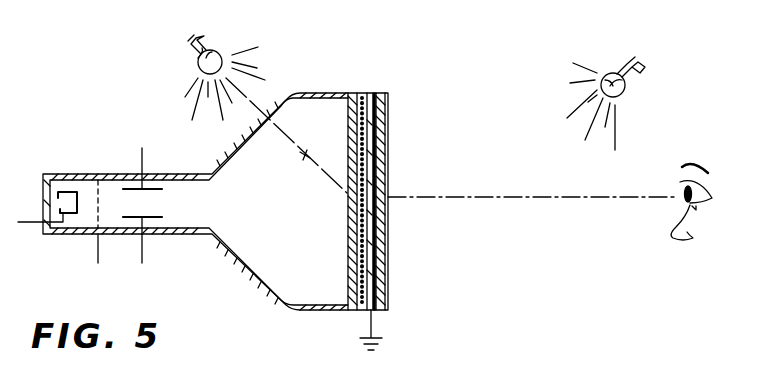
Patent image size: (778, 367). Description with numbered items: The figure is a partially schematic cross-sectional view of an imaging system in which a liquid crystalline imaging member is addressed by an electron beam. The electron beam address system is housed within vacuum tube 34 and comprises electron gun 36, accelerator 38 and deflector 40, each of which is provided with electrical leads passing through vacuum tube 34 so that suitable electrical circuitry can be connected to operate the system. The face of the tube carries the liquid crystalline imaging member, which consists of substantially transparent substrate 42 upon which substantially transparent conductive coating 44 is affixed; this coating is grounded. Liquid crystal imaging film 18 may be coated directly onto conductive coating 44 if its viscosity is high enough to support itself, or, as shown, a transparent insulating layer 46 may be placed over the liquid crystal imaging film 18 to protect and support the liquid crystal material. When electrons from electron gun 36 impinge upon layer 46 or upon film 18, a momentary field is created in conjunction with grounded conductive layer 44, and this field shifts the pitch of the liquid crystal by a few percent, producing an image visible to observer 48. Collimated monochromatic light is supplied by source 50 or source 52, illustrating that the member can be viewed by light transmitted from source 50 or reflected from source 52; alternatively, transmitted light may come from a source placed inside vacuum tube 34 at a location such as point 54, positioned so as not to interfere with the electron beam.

The liquid crystal imaging film 18 is at (362, 95).
The vacuum tube 34 is at (258, 284).
The electron gun 36 is at (70, 218).
The accelerator 38 is at (97, 182).
The deflector 40 is at (136, 219).
The substantially transparent substrate 42 is at (390, 99).
The substantially transparent conductive coating 44 is at (376, 95).
The transparent insulating layer 46 is at (352, 95).
The observer 48 is at (712, 197).
The light source 50 is at (207, 45).
The light source 52 is at (632, 92).
The point 54 is at (307, 150).